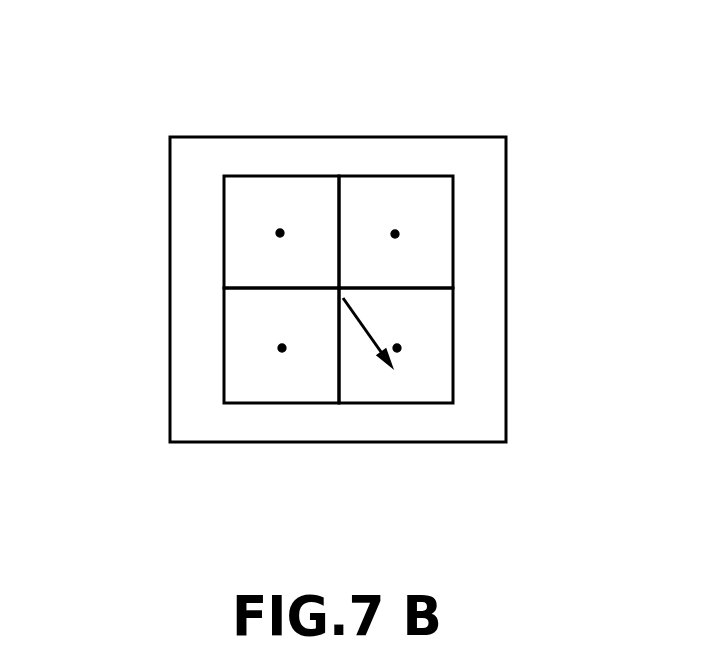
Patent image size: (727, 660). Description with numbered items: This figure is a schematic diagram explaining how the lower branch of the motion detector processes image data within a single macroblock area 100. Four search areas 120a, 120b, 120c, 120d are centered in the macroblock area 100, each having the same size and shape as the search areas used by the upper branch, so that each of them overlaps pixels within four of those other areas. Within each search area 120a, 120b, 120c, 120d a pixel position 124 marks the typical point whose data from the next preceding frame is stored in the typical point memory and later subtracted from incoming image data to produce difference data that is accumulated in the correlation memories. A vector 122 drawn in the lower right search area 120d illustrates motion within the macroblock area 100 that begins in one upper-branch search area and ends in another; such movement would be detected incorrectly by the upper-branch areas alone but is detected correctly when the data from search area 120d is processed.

The macroblock area 100 is at (528, 220).
The search area 120a is at (241, 192).
The search area 120b is at (376, 195).
The search area 120c is at (253, 387).
The search area 120d is at (412, 393).
The vector 122 is at (350, 323).
The pixel positions 124 is at (280, 233).